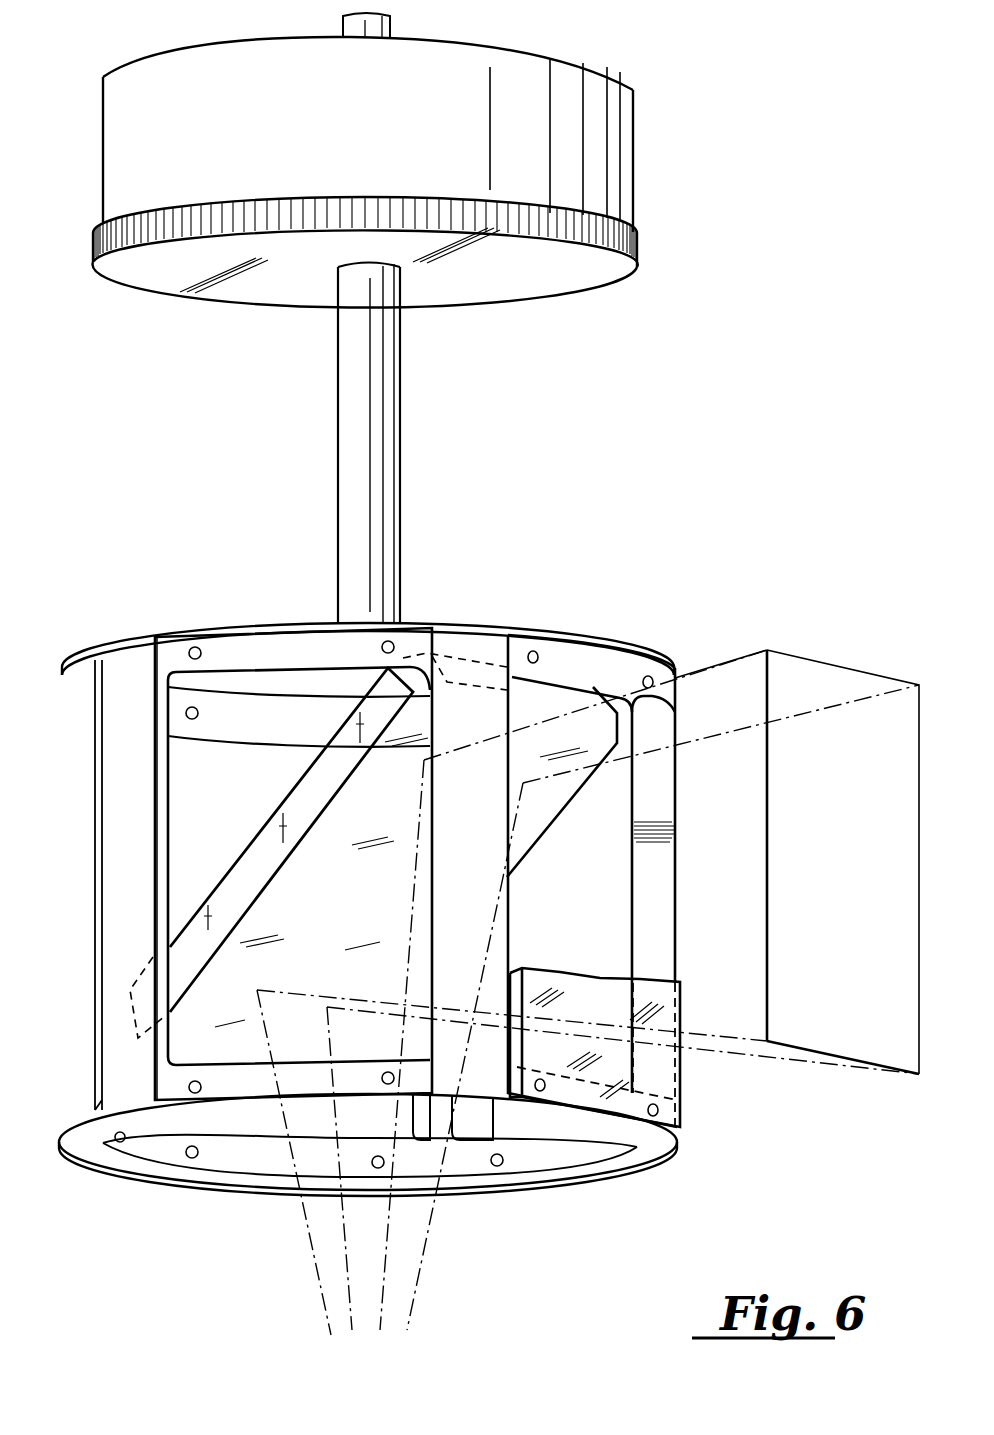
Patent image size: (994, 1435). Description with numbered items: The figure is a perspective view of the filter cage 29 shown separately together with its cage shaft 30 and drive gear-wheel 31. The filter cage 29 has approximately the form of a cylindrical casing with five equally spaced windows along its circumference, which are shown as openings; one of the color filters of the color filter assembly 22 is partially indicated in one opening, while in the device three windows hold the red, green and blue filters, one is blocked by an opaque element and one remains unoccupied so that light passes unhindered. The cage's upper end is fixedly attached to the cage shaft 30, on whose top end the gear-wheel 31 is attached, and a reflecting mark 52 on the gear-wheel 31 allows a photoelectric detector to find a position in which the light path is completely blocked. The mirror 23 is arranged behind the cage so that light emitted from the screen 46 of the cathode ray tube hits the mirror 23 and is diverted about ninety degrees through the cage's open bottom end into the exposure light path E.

The reflecting mark 52 is at (627, 162).
The gear-wheel 31 is at (93, 243).
The cage shaft 30 is at (358, 447).
The filter cage 29 is at (460, 637).
The screen 46 is at (835, 680).
The mirror 23 is at (297, 806).
The color filter assembly 22 is at (660, 1076).
The exposure light path E is at (393, 1303).